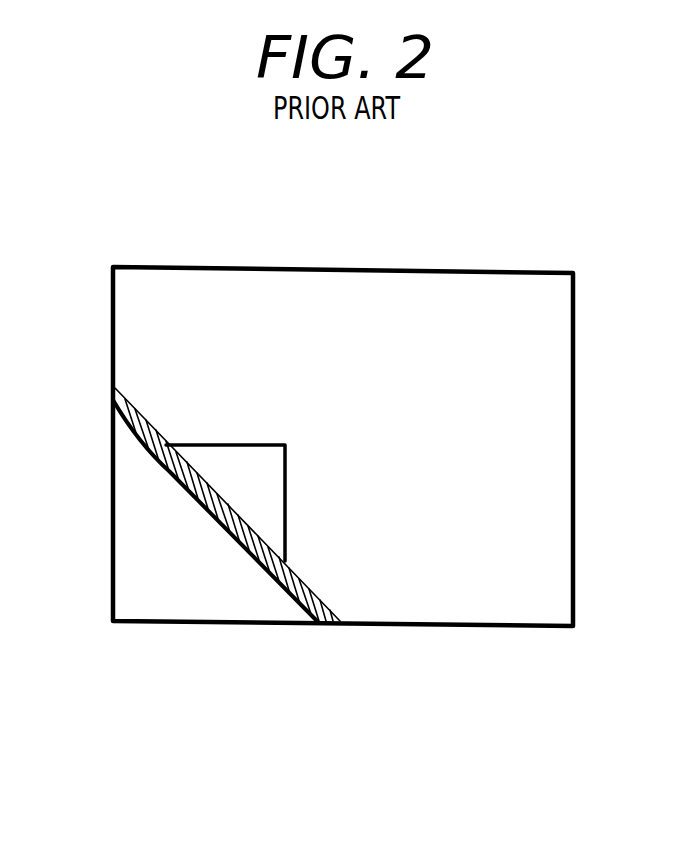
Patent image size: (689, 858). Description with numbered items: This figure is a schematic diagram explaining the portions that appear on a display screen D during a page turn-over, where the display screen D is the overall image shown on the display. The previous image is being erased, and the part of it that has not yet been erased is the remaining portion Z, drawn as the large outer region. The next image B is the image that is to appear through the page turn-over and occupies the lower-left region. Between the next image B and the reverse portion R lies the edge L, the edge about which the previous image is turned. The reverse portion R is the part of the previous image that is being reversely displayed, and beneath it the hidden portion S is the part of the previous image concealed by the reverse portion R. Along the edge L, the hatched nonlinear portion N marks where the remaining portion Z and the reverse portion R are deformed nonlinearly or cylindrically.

The remaining portion Z is at (412, 294).
The reverse portion R is at (273, 478).
The hidden portion S is at (244, 467).
The edge L is at (190, 493).
The nonlinear portion N is at (262, 572).
The next image B is at (150, 598).
The display screen D is at (489, 627).